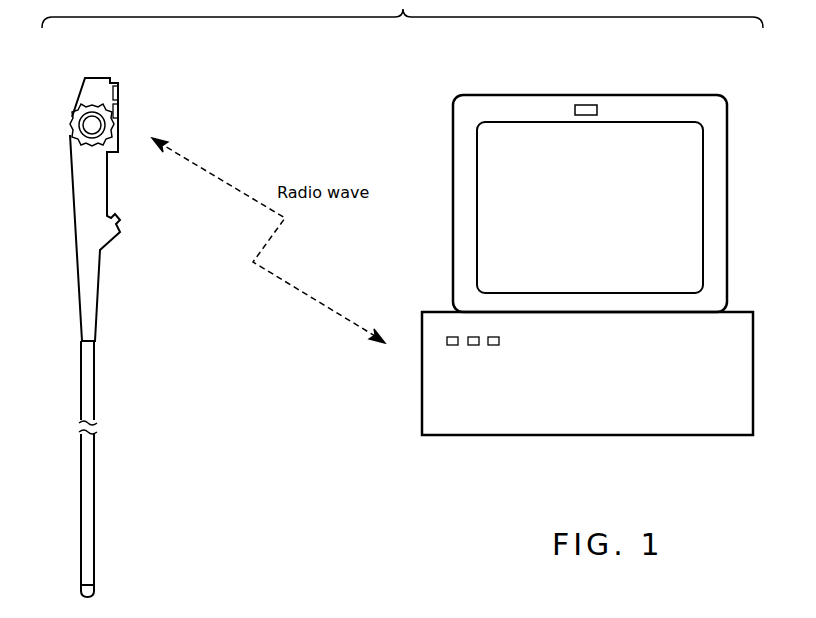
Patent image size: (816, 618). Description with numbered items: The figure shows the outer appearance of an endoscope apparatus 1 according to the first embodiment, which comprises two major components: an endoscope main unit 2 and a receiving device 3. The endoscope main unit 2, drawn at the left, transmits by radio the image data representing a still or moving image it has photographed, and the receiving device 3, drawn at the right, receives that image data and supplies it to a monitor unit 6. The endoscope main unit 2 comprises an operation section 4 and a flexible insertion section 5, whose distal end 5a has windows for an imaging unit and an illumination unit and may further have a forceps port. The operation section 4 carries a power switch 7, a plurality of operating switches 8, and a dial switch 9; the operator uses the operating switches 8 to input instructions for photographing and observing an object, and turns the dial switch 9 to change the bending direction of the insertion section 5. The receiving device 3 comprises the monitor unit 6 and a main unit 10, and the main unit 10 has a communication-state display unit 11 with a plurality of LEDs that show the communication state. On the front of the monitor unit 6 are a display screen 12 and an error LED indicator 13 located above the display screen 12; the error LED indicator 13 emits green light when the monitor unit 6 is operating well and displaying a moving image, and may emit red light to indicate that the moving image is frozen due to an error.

The endoscope apparatus 1 is at (310, 457).
The endoscope main unit 2 is at (204, 136).
The receiving device 3 is at (754, 250).
The operation section 4 is at (62, 77).
The flexible insertion section 5 is at (103, 343).
The distal end 5a is at (80, 589).
The monitor unit 6 is at (485, 94).
The power switch 7 is at (119, 87).
The operating switches 8 is at (119, 110).
The dial switch 9 is at (92, 103).
The main unit 10 is at (422, 407).
The communication-state display unit 11 is at (508, 352).
The display screen 12 is at (667, 145).
The error LED indicator 13 is at (586, 104).